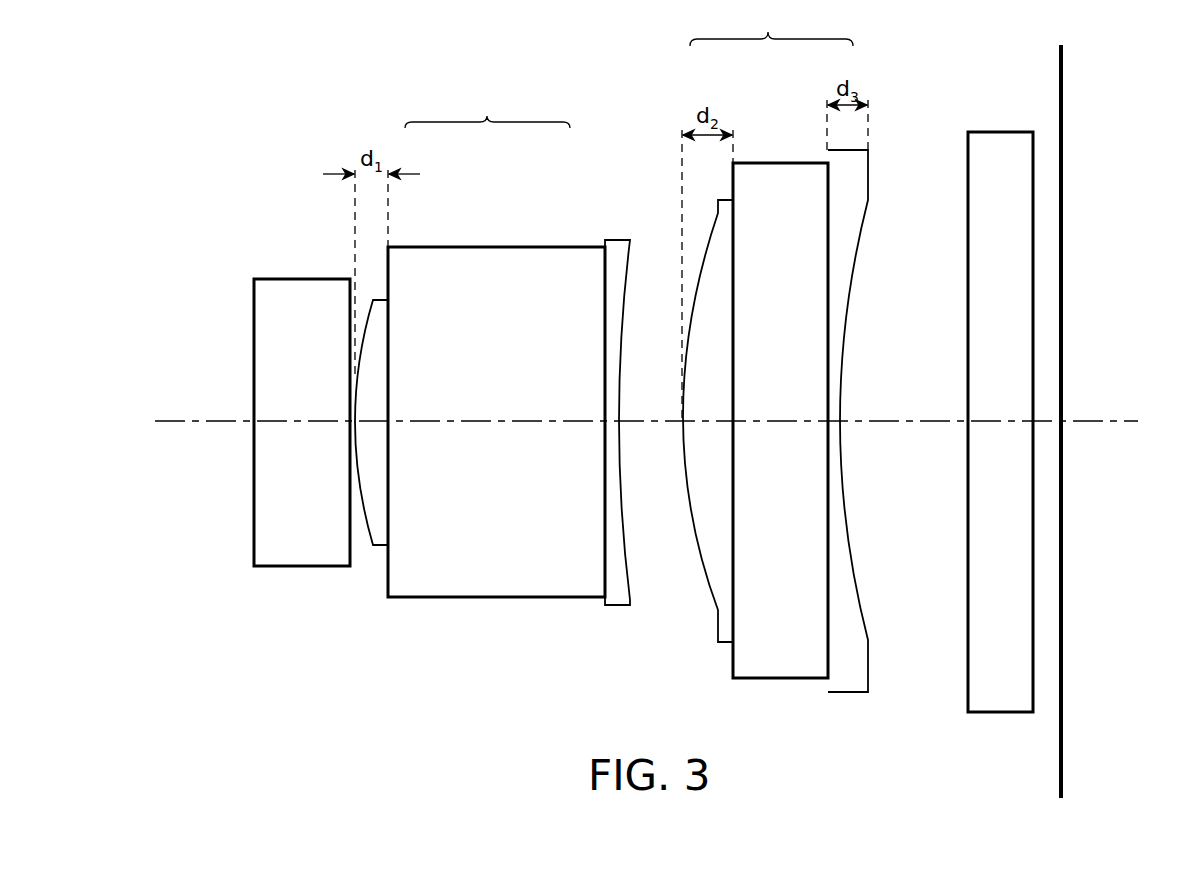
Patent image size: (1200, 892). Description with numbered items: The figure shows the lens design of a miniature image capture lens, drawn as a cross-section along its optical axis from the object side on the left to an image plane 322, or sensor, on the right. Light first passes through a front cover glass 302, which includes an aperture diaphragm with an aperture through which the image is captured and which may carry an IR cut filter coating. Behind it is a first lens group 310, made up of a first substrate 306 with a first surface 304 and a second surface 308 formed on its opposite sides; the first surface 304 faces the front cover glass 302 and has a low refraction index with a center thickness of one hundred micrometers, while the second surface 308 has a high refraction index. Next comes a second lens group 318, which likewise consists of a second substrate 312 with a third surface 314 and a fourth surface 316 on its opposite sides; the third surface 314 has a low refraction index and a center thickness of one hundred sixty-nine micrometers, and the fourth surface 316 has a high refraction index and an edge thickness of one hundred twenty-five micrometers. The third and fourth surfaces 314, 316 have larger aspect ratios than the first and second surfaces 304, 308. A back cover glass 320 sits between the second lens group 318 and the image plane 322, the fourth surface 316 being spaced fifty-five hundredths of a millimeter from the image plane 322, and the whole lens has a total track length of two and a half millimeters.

The front cover glass 302 is at (297, 298).
The first surface 304 is at (380, 323).
The first substrate 306 is at (492, 294).
The second surface 308 is at (617, 254).
The first lens group 310 is at (492, 348).
The second substrate 312 is at (776, 198).
The third surface 314 is at (727, 215).
The fourth surface 316 is at (852, 182).
The second lens group 318 is at (764, 350).
The back cover glass 320 is at (1005, 160).
The image plane 322 is at (1063, 60).